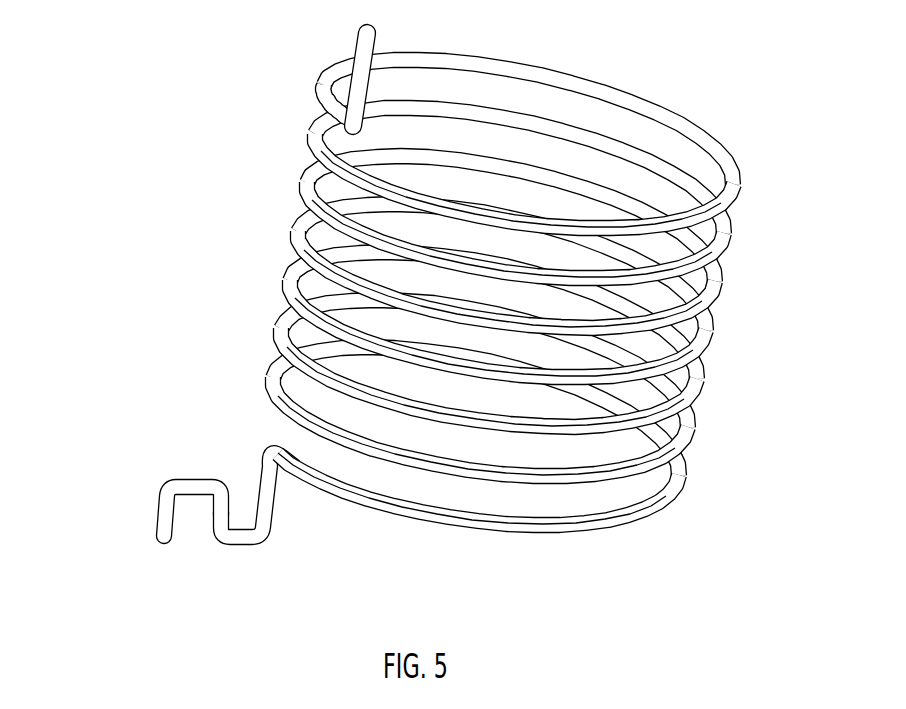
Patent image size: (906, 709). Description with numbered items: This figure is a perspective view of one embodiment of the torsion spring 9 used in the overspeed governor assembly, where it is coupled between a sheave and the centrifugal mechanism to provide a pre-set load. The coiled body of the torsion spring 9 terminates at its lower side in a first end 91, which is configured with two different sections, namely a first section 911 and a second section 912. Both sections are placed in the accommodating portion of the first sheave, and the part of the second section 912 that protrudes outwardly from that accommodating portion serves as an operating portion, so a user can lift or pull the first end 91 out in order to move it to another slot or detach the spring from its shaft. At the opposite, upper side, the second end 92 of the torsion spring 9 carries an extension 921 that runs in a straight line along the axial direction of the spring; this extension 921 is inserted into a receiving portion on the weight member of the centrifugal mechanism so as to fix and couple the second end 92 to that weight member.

The torsion spring 9 is at (510, 262).
The first end 91 is at (187, 512).
The first section 911 is at (243, 544).
The second section 912 is at (202, 479).
The second end 92 is at (352, 82).
The extension 921 is at (358, 44).